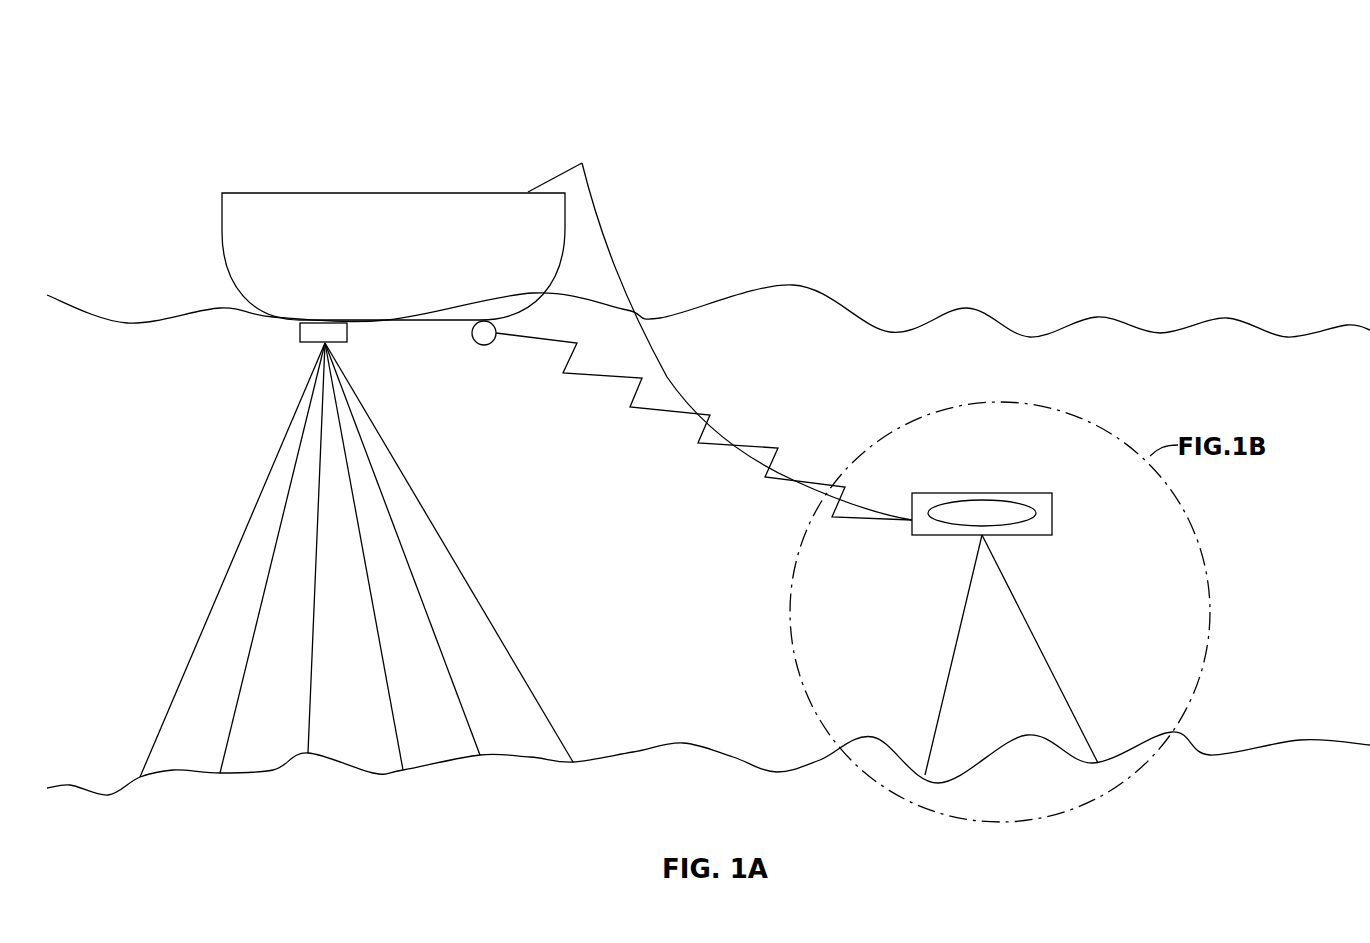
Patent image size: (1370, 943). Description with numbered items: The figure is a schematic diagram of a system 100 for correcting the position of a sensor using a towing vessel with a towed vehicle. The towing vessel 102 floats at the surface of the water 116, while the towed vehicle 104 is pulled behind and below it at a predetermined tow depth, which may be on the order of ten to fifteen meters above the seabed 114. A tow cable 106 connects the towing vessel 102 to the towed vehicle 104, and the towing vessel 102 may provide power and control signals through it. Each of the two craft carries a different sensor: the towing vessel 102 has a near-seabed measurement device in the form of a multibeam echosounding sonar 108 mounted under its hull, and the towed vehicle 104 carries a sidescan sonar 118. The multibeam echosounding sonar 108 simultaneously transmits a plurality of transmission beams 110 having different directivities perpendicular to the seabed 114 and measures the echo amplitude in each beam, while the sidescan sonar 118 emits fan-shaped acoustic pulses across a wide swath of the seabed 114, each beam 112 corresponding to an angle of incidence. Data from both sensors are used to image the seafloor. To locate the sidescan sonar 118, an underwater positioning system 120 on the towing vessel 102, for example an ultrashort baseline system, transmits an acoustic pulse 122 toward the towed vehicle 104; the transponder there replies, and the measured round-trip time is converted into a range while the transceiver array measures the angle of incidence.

The system 100 is at (141, 104).
The towing vessel 102 is at (390, 193).
The towed vehicle 104 is at (988, 493).
The tow cable 106 is at (665, 375).
The multibeam echosounding sonar 108 is at (300, 333).
The transmission beams 110 is at (308, 628).
The beam 112 is at (951, 654).
The seabed 114 is at (1210, 757).
The surface of the water 116 is at (1097, 315).
The sidescan sonar 118 is at (1032, 515).
The underwater positioning system 120 is at (474, 338).
The acoustic pulse 122 is at (598, 378).